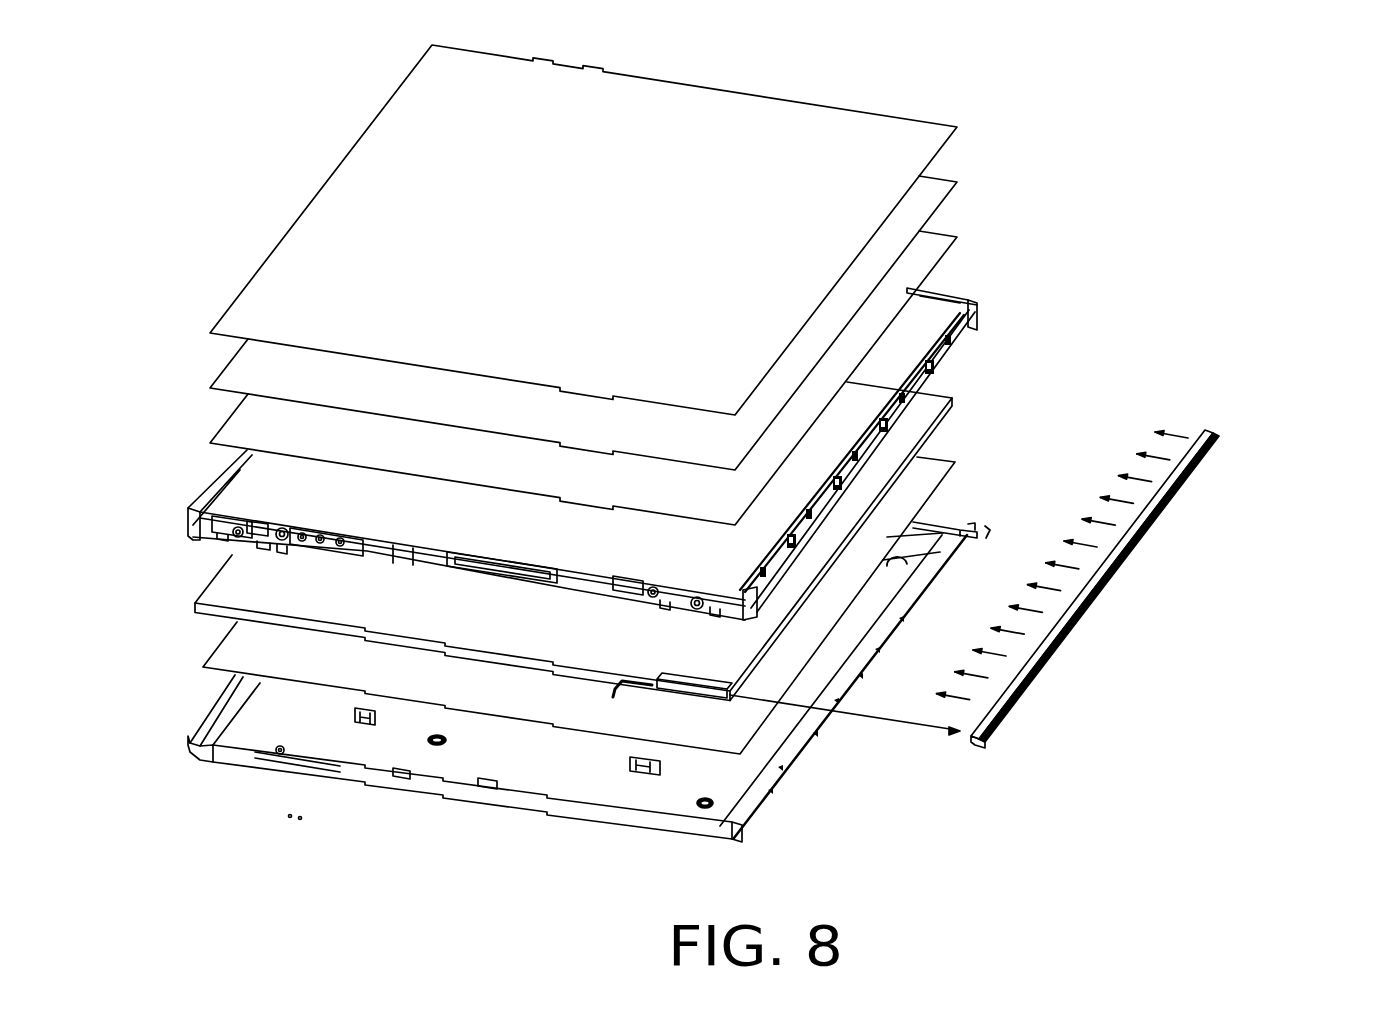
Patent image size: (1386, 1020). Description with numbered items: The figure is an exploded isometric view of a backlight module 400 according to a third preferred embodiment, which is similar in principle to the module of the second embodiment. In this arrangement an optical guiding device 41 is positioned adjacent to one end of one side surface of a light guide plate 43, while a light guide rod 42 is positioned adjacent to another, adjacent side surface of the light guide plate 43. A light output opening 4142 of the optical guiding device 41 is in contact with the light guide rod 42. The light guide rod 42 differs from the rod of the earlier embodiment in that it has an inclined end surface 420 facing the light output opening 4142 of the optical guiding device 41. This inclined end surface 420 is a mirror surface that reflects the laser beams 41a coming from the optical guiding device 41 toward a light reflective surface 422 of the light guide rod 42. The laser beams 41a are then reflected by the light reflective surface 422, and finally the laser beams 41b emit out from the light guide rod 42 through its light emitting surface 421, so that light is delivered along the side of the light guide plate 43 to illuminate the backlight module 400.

The backlight module 400 is at (307, 145).
The optical guiding device 41 is at (697, 693).
The laser beams 41a is at (902, 723).
The laser beams 41b is at (1072, 545).
The light output opening 4142 is at (735, 697).
The light guide rod 42 is at (1200, 437).
The inclined end surface 420 is at (977, 745).
The light emitting surface 421 is at (1150, 502).
The light reflective surface 422 is at (1213, 433).
The light guide plate 43 is at (920, 417).